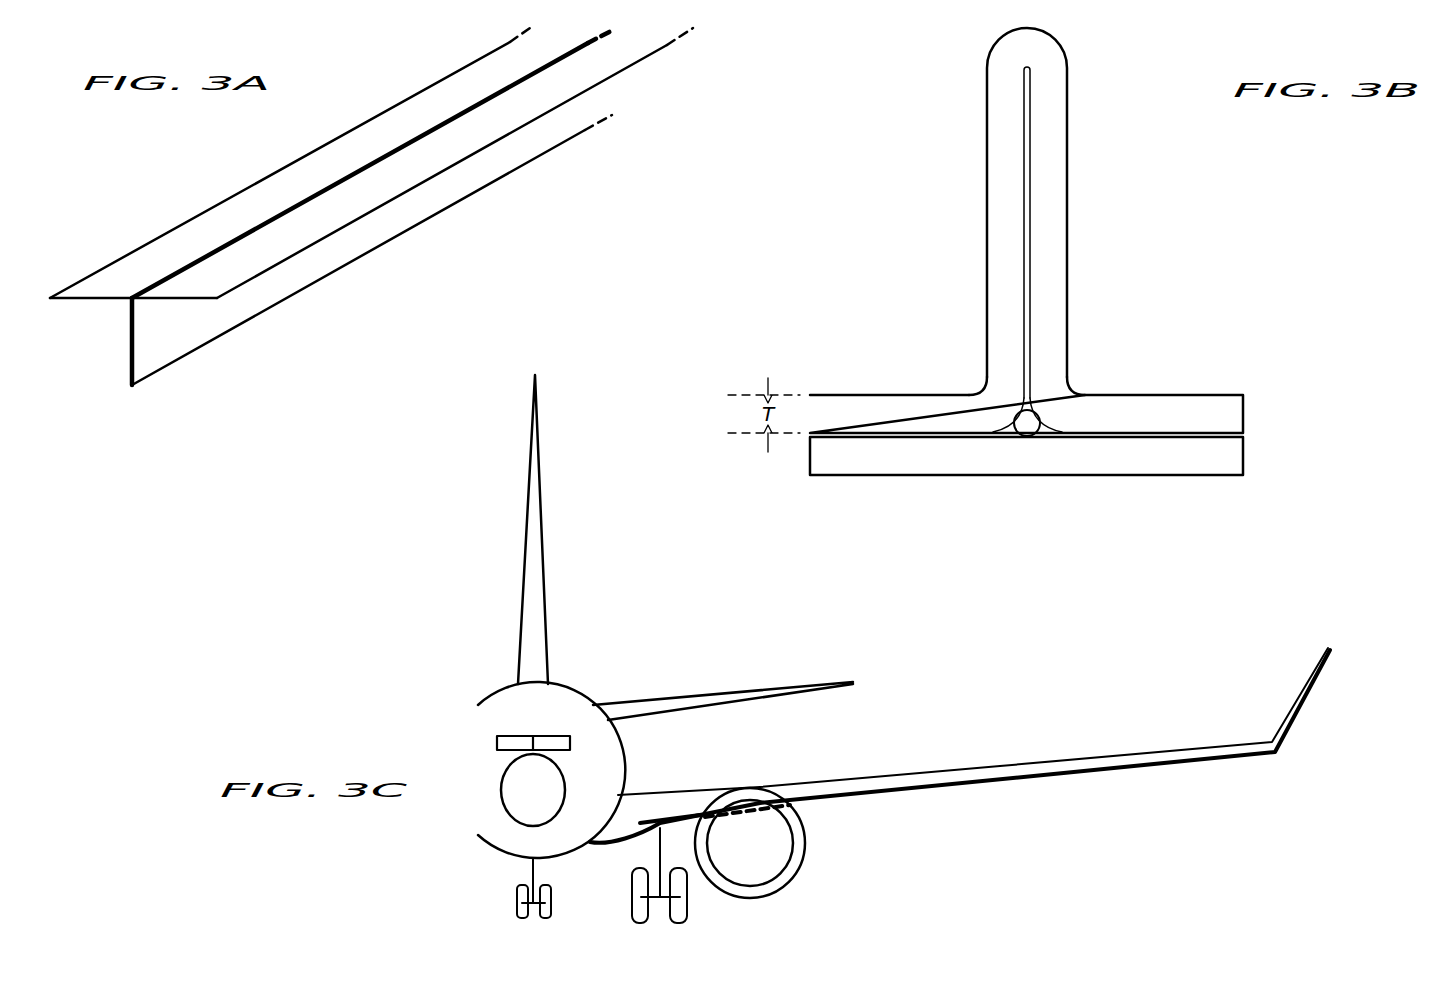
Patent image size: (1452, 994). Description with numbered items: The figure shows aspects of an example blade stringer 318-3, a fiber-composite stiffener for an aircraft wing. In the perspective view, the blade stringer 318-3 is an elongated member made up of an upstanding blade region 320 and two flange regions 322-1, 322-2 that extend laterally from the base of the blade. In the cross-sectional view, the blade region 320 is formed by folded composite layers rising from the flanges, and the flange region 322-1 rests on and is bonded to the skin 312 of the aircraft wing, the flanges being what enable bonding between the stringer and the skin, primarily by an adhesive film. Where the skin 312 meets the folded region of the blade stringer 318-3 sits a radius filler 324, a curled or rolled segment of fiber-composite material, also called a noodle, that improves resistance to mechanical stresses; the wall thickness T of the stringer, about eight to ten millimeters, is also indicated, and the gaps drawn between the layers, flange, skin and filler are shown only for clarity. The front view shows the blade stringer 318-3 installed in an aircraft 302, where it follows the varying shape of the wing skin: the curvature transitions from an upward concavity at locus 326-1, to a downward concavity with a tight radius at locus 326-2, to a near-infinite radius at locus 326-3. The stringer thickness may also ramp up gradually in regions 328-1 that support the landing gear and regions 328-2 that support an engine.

In FIG. 3C, the aircraft 302 is at (904, 649).
In FIG. 3B, the skin 312 is at (1007, 467).
In FIG. 3A, the blade stringer 318-3 is at (371, 207).
In FIG. 3B, the blade stringer 318-3 is at (1026, 230).
In FIG. 3C, the blade stringer 318-3 is at (990, 783).
In FIG. 3A, the blade region 320 is at (372, 207).
In FIG. 3B, the blade region 320 is at (1129, 45).
In FIG. 3A, the flange region 322-1 is at (412, 163).
In FIG. 3B, the flange region 322-1 is at (977, 372).
In FIG. 3A, the flange region 322-2 is at (290, 163).
In FIG. 3B, the radius filler 324 is at (1013, 417).
In FIG. 3C, the locus 326-1 is at (617, 852).
In FIG. 3C, the locus 326-2 is at (820, 793).
In FIG. 3C, the locus 326-3 is at (1210, 772).
In FIG. 3C, the region that supports landing gear 328-1 is at (659, 818).
In FIG. 3C, the region that supports an engine 328-2 is at (747, 820).